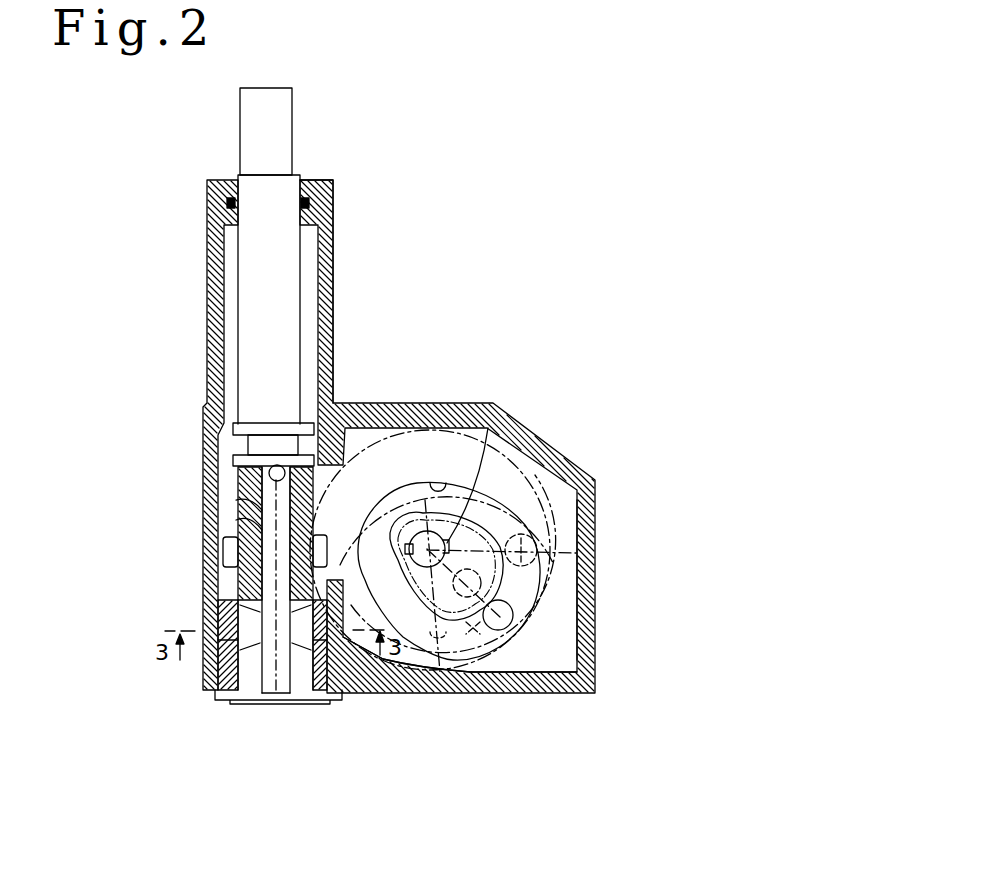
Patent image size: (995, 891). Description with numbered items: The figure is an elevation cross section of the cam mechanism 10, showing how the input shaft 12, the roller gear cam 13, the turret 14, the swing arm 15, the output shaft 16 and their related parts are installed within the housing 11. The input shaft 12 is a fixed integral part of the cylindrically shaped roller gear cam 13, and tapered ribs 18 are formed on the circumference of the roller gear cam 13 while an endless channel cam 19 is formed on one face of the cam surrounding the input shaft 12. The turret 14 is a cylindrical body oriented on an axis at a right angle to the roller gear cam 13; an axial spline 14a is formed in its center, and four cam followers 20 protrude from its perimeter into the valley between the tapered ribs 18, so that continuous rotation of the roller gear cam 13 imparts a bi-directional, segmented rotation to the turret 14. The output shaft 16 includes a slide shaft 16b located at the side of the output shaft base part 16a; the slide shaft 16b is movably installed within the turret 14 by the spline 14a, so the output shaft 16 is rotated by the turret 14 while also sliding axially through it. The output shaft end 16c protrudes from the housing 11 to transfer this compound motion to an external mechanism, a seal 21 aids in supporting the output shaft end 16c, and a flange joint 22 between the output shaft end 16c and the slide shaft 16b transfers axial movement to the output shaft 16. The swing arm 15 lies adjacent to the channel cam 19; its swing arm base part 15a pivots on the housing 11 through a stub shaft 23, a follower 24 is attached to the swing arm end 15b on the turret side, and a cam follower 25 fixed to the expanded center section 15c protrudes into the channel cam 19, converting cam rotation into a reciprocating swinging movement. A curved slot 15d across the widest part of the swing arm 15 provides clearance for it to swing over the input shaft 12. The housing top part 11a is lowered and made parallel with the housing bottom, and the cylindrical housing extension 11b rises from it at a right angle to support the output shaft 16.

The cam mechanism 10 is at (505, 272).
The housing 11 is at (597, 490).
The housing top part 11a is at (474, 403).
The housing extension 11b is at (333, 248).
The input shaft 12 is at (490, 405).
The roller gear cam 13 is at (535, 512).
The turret 14 is at (240, 475).
The axial spline 14a is at (250, 515).
The swing arm 15 is at (383, 480).
The swing arm base part 15a is at (598, 533).
The swing arm end 15b is at (212, 657).
The expanded center section 15c is at (458, 694).
The curved slot 15d is at (414, 694).
The output shaft 16 is at (255, 270).
The output shaft base part 16a is at (290, 697).
The slide shaft 16b is at (272, 588).
The output shaft end 16c is at (245, 132).
The tapered ribs 18 is at (510, 457).
The endless channel cam 19 is at (437, 483).
The cam followers 20 is at (225, 553).
The seal 21 is at (333, 203).
The flange joint 22 is at (235, 434).
The stub shaft 23 is at (572, 572).
The follower 24 is at (268, 693).
The cam follower 25 is at (503, 628).